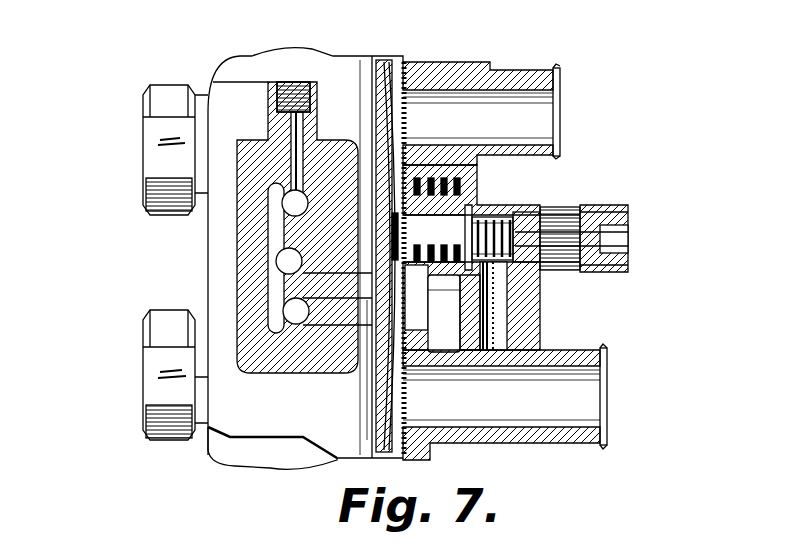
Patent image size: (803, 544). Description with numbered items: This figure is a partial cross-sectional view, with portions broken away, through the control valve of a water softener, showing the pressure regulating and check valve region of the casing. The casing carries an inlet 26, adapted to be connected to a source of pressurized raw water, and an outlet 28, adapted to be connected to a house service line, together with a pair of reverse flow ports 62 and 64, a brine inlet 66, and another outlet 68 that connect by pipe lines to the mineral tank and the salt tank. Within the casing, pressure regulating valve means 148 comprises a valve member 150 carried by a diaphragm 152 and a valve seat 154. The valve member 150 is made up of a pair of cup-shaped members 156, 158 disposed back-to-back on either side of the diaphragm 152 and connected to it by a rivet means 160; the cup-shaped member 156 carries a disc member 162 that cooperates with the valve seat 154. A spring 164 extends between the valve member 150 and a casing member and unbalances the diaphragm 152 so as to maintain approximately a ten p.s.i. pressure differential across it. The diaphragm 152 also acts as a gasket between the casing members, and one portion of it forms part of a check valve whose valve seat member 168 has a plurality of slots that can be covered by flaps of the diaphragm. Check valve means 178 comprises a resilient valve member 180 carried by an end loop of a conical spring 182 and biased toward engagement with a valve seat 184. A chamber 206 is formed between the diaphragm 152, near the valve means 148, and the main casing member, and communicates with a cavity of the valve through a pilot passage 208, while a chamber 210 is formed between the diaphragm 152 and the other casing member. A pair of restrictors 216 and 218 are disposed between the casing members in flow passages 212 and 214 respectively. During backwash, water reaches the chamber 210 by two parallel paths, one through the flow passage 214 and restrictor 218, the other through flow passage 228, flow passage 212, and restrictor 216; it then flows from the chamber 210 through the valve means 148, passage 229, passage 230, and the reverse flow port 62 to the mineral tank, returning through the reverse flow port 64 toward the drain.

The inlet 26 is at (143, 152).
The outlet 28 is at (160, 370).
The reverse flow port 62 is at (598, 405).
The reverse flow port 64 is at (556, 127).
The brine inlet 66 is at (629, 222).
The outlet 68 is at (297, 81).
The pressure regulating valve means 148 is at (425, 266).
The valve member 150 is at (413, 205).
The diaphragm 152 is at (396, 185).
The valve seat 154 is at (443, 207).
The cup-shaped member 156 is at (430, 205).
The cup-shaped member 158 is at (398, 200).
The rivet means 160 is at (372, 240).
The disc member 162 is at (458, 217).
The spring 164 is at (456, 207).
The valve seat member 168 is at (397, 418).
The check valve means 178 is at (575, 207).
The resilient valve member 180 is at (598, 208).
The conical spring 182 is at (535, 207).
The valve seat 184 is at (600, 240).
The chamber 206 is at (286, 305).
The pilot passage 208 is at (370, 215).
The chamber 210 is at (447, 318).
The flow passage 212 is at (470, 292).
The flow passage 214 is at (430, 323).
The restrictor 216 is at (383, 368).
The restrictor 218 is at (378, 380).
The flow passage 228 is at (296, 310).
The passage 229 is at (480, 207).
The passage 230 is at (498, 283).